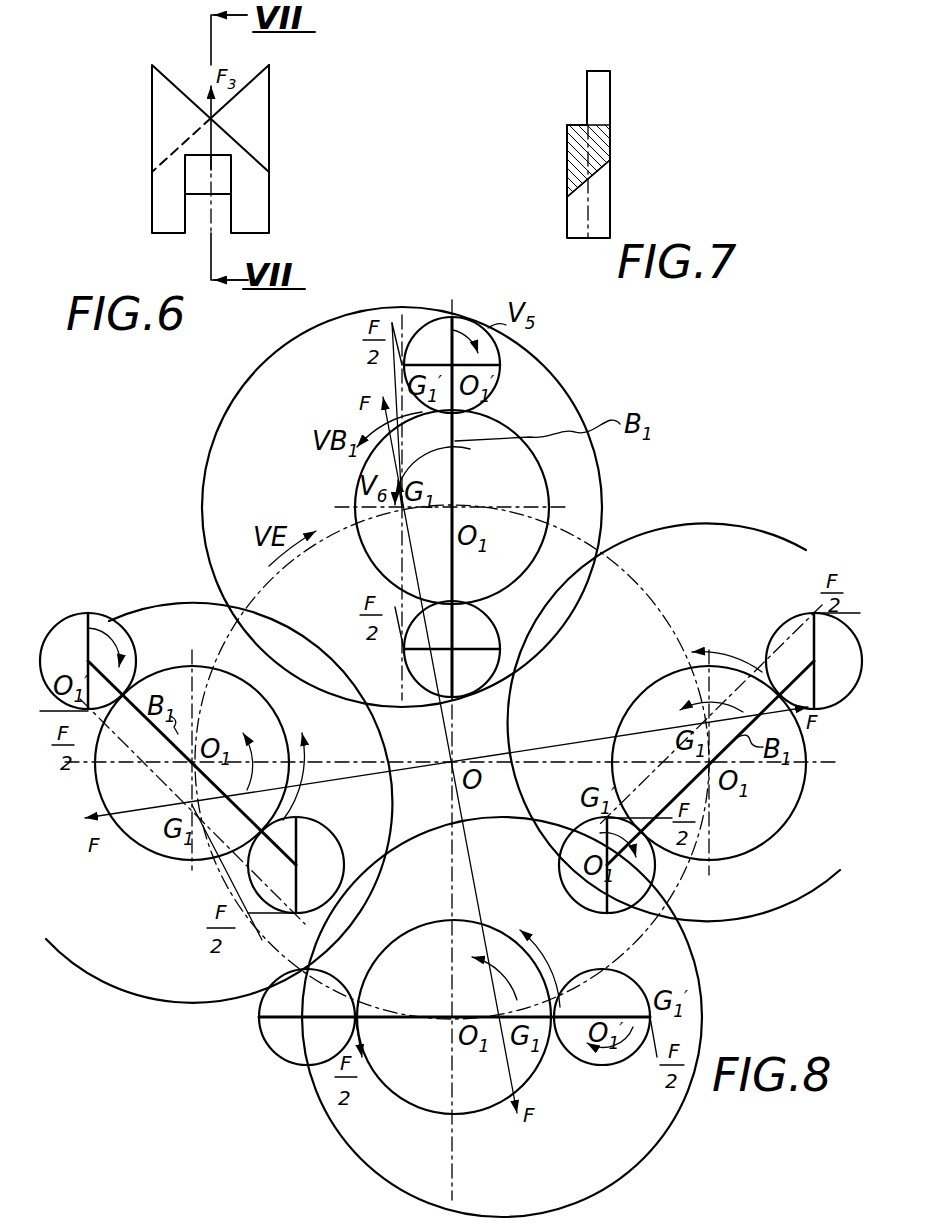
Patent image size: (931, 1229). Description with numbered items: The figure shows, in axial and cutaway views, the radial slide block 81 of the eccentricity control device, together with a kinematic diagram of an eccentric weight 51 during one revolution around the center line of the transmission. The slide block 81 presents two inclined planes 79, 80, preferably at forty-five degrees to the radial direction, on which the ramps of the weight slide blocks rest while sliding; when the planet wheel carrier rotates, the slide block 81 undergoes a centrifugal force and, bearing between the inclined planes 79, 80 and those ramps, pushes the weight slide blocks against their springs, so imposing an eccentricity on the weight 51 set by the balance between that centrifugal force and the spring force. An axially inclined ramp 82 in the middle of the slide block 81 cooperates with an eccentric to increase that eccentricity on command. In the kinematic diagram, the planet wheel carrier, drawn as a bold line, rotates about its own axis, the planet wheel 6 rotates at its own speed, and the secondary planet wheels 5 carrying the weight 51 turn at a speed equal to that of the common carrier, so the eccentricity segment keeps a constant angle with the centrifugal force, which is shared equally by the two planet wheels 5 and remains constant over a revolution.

In FIG. 8, the secondary planet wheels 5 is at (492, 378).
In FIG. 8, the planet wheel 6 is at (262, 686).
In FIG. 8, the weight 51 is at (577, 408).
In FIG. 6, the inclined plane 79 is at (178, 148).
In FIG. 7, the inclined plane 79 is at (570, 126).
In FIG. 6, the inclined plane 80 is at (248, 150).
In FIG. 7, the inclined plane 80 is at (594, 94).
In FIG. 6, the radial slide block 81 is at (291, 100).
In FIG. 7, the radial slide block 81 is at (634, 104).
In FIG. 6, the axially inclined ramp 82 is at (200, 181).
In FIG. 7, the axially inclined ramp 82 is at (594, 170).